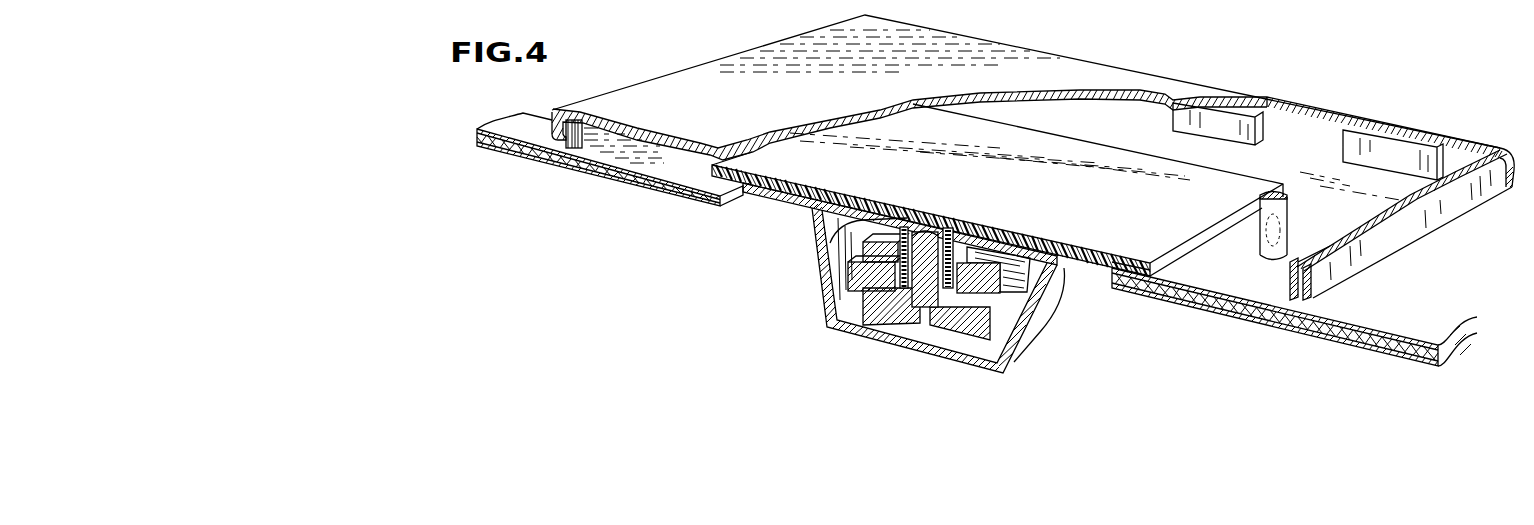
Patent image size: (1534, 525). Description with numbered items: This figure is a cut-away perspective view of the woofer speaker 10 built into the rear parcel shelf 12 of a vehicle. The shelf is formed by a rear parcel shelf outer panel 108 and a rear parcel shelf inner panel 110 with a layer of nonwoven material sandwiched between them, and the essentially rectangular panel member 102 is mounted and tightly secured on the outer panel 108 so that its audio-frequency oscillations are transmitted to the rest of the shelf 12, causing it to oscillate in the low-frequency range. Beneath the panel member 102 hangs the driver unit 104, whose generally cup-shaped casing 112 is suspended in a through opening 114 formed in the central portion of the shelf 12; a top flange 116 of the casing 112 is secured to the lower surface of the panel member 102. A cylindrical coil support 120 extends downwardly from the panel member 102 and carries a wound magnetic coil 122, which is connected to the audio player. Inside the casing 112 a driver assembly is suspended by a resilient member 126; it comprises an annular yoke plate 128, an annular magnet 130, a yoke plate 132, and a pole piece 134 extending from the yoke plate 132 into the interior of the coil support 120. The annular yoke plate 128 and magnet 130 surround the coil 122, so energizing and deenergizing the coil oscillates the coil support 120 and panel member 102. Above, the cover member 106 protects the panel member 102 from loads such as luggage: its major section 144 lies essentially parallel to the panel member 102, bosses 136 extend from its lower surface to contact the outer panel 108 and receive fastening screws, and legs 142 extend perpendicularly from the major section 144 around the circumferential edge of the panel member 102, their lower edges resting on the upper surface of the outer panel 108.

The speaker 10 is at (1142, 148).
The rear parcel shelf 12 is at (977, 259).
The panel member 102 is at (1090, 160).
The driver unit 104 is at (806, 245).
The cover member 106 is at (1033, 149).
The rear parcel shelf outer panel 108 is at (668, 162).
The rear parcel shelf inner panel 110 is at (640, 187).
The casing 112 is at (518, 143).
The through opening 114 is at (1118, 260).
The top flange 116 is at (1057, 258).
The coil support 120 is at (908, 282).
The magnetic coil 122 is at (956, 226).
The resilient member 126 is at (1019, 277).
The annular yoke plate 128 is at (886, 226).
The annular magnet 130 is at (850, 276).
The yoke plate 132 is at (877, 308).
The pole piece 134 is at (924, 242).
The boss 136 is at (1287, 218).
The legs 142 is at (1247, 144).
The major section 144 is at (778, 68).